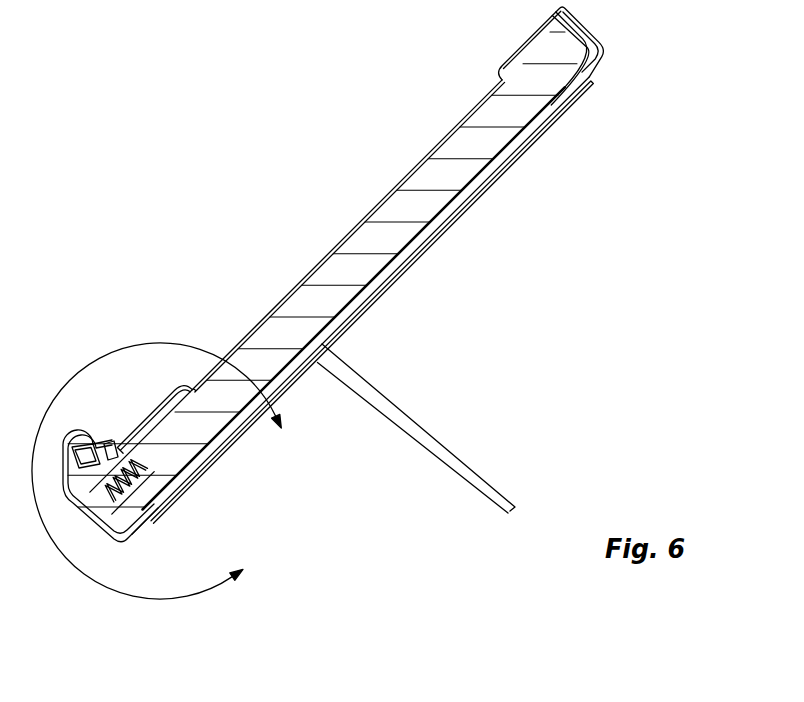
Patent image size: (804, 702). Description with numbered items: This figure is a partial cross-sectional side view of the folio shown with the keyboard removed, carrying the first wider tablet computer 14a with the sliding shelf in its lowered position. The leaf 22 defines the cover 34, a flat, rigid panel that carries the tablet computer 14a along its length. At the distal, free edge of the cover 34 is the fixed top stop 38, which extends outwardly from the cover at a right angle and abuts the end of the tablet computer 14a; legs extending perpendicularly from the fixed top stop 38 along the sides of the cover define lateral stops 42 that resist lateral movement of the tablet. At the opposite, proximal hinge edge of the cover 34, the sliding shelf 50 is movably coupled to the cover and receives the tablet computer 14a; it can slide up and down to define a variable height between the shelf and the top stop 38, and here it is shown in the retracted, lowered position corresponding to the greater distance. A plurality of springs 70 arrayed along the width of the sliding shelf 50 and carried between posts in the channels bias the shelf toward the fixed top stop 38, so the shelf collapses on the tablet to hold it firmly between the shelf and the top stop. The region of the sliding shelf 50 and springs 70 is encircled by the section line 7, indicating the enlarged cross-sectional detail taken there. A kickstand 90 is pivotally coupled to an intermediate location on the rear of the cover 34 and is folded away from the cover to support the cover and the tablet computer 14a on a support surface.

The first wider tablet computer 14a is at (361, 238).
The leaf 22 is at (533, 138).
The cover 34 is at (470, 202).
The fixed top stop 38 is at (590, 30).
The lateral stops 42 is at (516, 44).
The sliding shelf 50 is at (137, 400).
The springs 70 is at (140, 500).
The kickstand 90 is at (447, 445).
The line 7 is at (158, 471).